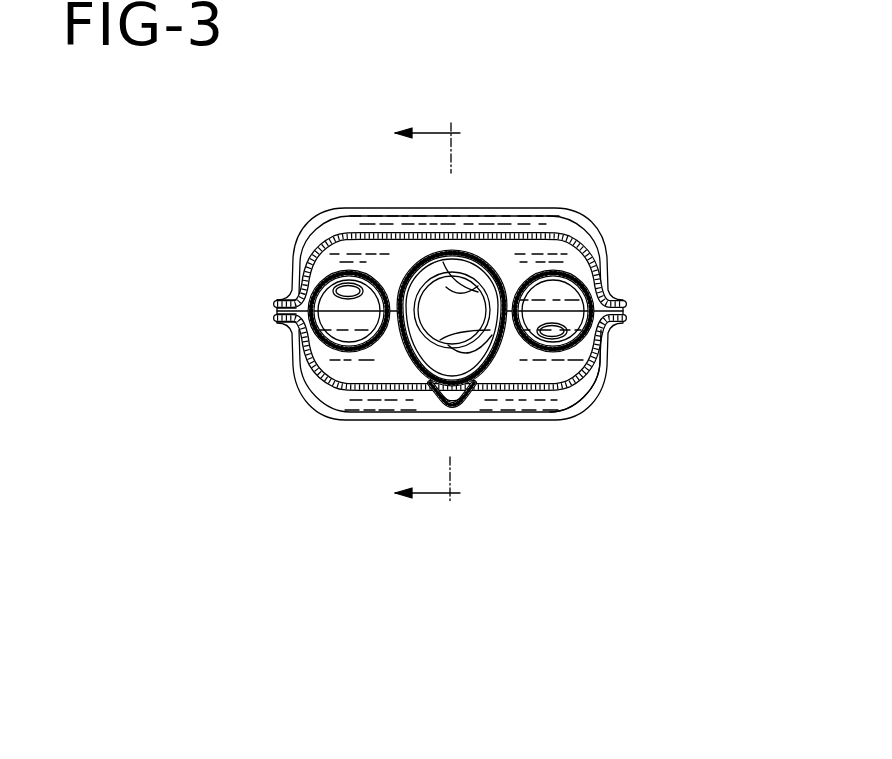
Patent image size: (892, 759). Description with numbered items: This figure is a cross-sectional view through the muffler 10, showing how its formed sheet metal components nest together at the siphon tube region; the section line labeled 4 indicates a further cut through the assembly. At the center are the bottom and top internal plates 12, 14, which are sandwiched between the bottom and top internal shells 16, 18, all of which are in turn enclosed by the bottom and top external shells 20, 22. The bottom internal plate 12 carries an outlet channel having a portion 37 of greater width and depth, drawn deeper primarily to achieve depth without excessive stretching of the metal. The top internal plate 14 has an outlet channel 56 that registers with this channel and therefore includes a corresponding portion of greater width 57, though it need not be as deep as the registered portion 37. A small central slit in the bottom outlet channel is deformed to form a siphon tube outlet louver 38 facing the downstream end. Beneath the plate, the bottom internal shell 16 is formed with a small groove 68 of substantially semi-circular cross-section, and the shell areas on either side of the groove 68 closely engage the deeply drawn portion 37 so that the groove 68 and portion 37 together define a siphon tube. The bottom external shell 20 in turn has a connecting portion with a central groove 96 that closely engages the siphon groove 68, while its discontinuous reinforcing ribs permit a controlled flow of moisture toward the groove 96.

The muffler 10 is at (715, 152).
The bottom internal plate 12 is at (275, 317).
The top internal plate 14 is at (275, 303).
The bottom internal shell 16 is at (318, 375).
The top internal shell 18 is at (330, 220).
The bottom external shell 20 is at (590, 372).
The top external shell 22 is at (575, 220).
The portion of greater width and depth 37 is at (423, 355).
The siphon tube outlet louver 38 is at (490, 337).
The outlet channel 56 is at (483, 287).
The portion of greater width 57 is at (441, 262).
The groove 68 is at (432, 397).
The central groove 96 is at (455, 400).
The section line 4- 4 is at (441, 315).